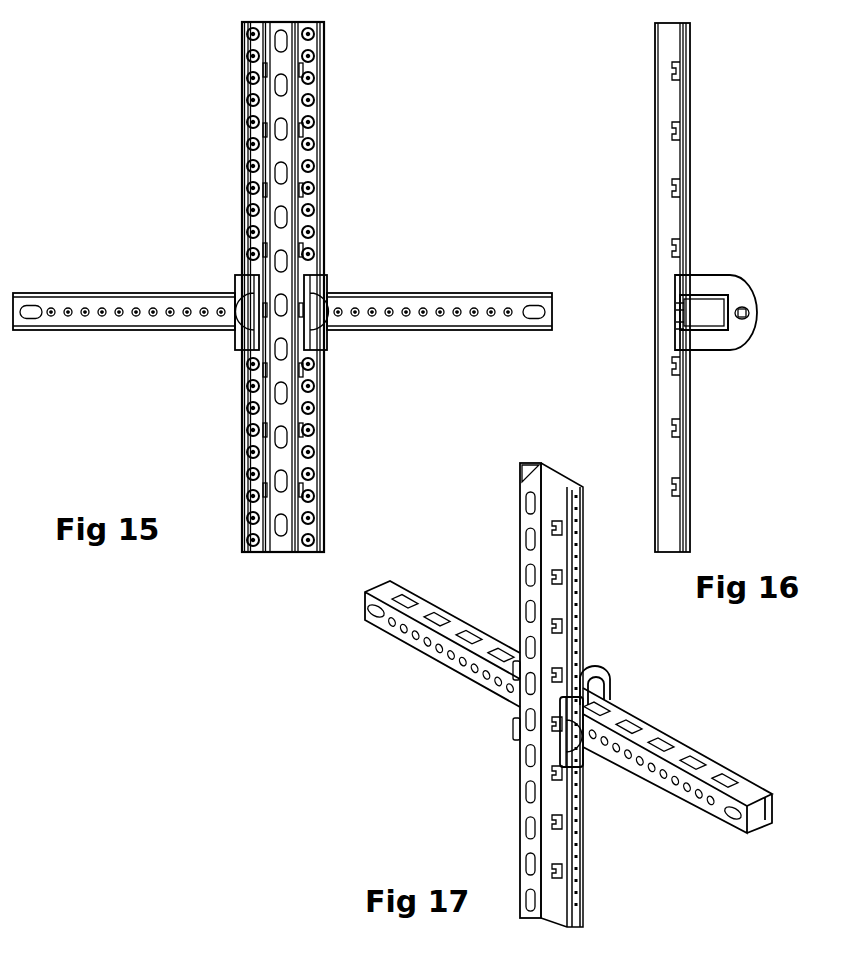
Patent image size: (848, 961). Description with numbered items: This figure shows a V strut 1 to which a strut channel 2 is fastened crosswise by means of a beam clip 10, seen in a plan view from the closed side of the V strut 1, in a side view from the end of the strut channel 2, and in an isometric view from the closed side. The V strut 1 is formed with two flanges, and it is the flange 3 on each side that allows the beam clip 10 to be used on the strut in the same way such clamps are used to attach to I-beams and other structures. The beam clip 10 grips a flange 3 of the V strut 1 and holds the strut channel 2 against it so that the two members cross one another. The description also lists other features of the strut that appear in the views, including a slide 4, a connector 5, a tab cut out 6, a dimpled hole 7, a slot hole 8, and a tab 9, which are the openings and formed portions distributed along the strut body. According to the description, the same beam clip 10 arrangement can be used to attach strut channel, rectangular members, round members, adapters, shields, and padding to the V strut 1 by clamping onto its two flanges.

In FIG. 15, the V strut 1 is at (352, 150).
In FIG. 16, the V strut 1 is at (704, 146).
In FIG. 17, the V strut 1 is at (477, 512).
In FIG. 15, the strut channel 2 is at (101, 270).
In FIG. 16, the strut channel 2 is at (708, 331).
In FIG. 17, the strut channel 2 is at (389, 653).
In FIG. 15, the flange 3 is at (241, 105).
In FIG. 16, the flange 3 is at (694, 462).
In FIG. 17, the flange 3 is at (577, 623).
In FIG. 16, the slide 4 is at (656, 287).
In FIG. 17, the slide 4 is at (542, 690).
In FIG. 15, the connector 5 is at (60, 332).
In FIG. 16, the connector 5 is at (652, 383).
In FIG. 16, the tab cut out 6 is at (675, 192).
In FIG. 17, the tab cut out 6 is at (700, 753).
In FIG. 15, the dimpled hole 7 is at (315, 208).
In FIG. 17, the dimpled hole 7 is at (472, 670).
In FIG. 15, the slot hole 8 is at (530, 298).
In FIG. 17, the slot hole 8 is at (527, 797).
In FIG. 17, the tab 9 is at (556, 823).
In FIG. 15, the beam clip 10 is at (240, 278).
In FIG. 16, the beam clip 10 is at (741, 283).
In FIG. 17, the beam clip 10 is at (615, 671).